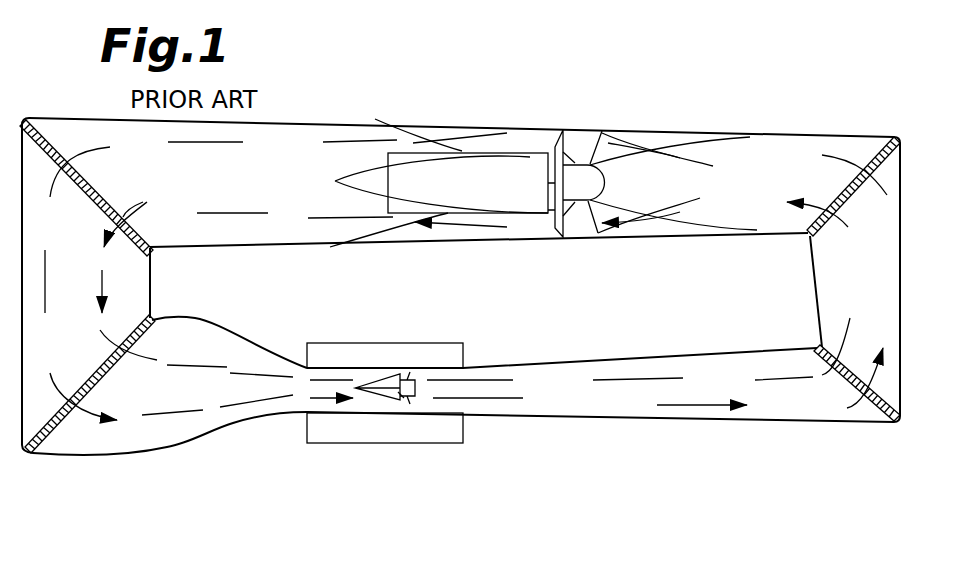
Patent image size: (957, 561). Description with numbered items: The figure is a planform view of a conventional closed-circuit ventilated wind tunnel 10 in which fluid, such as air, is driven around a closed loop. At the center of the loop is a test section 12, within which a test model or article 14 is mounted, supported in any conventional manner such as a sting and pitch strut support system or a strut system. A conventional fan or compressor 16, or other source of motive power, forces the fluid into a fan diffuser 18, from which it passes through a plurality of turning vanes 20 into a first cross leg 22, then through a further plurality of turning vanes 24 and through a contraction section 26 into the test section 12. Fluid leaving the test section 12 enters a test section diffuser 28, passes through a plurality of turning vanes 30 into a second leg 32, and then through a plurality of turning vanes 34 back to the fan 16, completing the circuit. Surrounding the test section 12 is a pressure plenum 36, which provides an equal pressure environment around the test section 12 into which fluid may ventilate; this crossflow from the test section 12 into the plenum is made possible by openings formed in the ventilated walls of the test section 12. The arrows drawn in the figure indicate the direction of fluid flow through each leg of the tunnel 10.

The closed-circuit ventilated wind tunnel 10 is at (460, 84).
The test section 12 is at (372, 378).
The test model or article 14 is at (400, 400).
The fan or compressor 16 is at (523, 158).
The fan diffuser 18 is at (312, 137).
The turning vanes 20 is at (97, 187).
The first cross leg 22 is at (85, 305).
The turning vanes 24 is at (103, 380).
The contraction section 26 is at (210, 417).
The test section diffuser 28 is at (593, 403).
The turning vanes 30 is at (863, 412).
The second leg 32 is at (878, 287).
The turning vanes 34 is at (872, 155).
The pressure plenum 36 is at (455, 350).